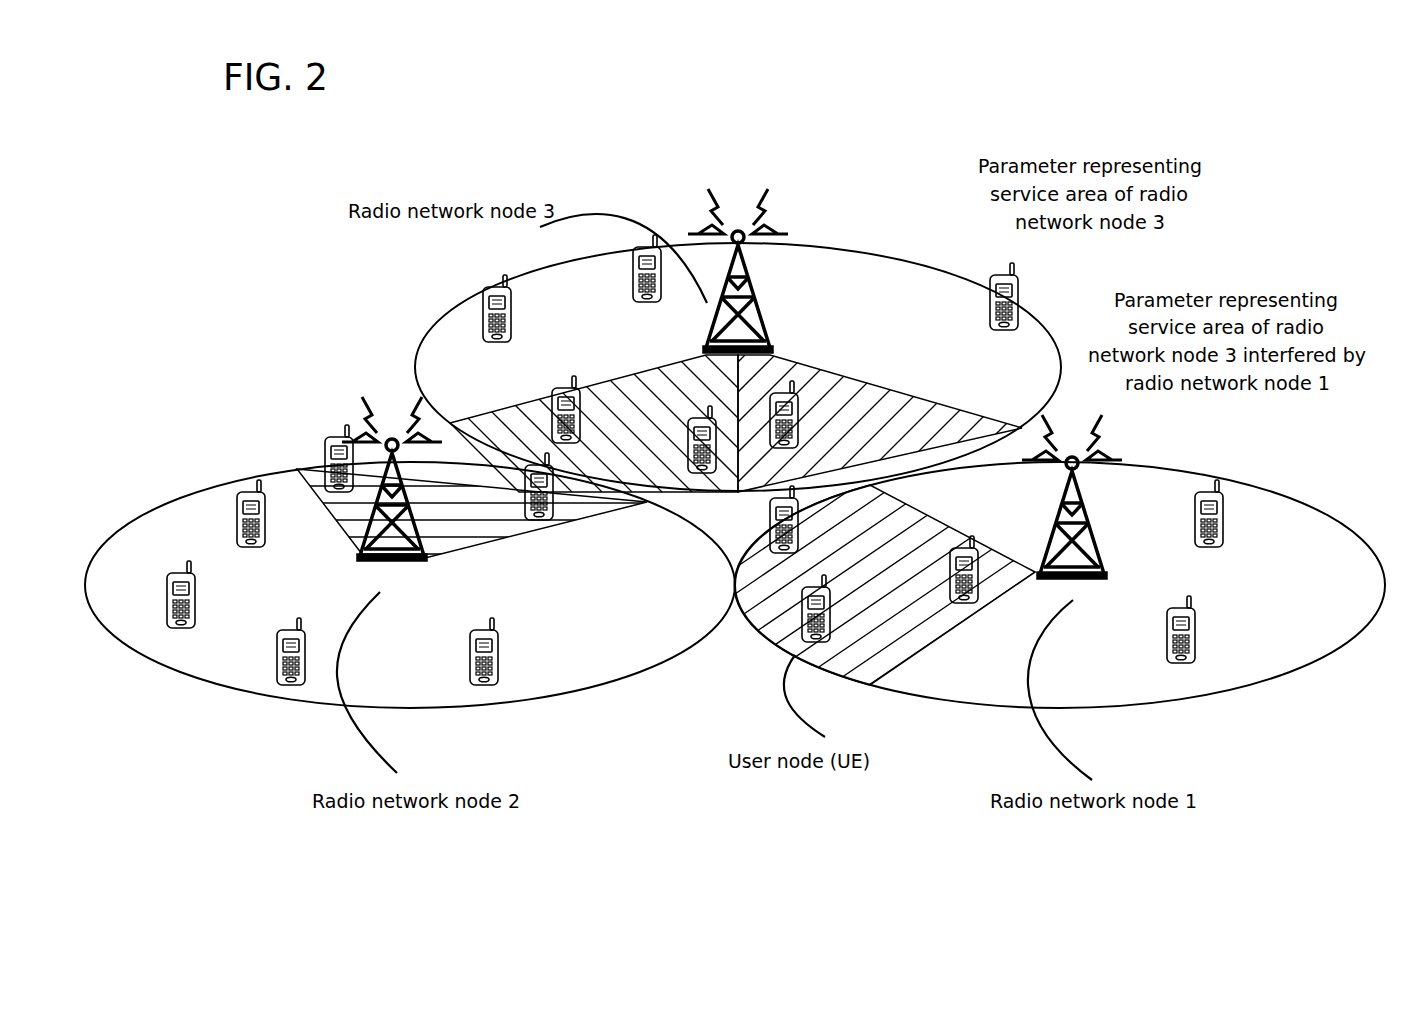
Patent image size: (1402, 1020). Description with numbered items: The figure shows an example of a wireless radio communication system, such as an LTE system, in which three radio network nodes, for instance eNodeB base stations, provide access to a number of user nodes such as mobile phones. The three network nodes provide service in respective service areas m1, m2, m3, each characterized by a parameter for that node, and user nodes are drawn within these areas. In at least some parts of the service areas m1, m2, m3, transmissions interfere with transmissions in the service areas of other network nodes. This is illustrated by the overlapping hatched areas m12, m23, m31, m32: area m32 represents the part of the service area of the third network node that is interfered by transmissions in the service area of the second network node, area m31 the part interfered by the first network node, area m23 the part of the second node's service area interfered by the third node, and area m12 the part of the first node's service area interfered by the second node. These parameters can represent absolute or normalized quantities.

The service area of network node 1 m1 is at (1060, 585).
The service area of network node 2 m2 is at (410, 585).
The service area of network node 3 m3 is at (975, 195).
The interfered service area of network node 1 m12 is at (884, 583).
The interfered service area of network node 2 m23 is at (475, 510).
The interfered service area of network node 3 m31 is at (1100, 338).
The interfered service area of network node 3 m32 is at (578, 423).